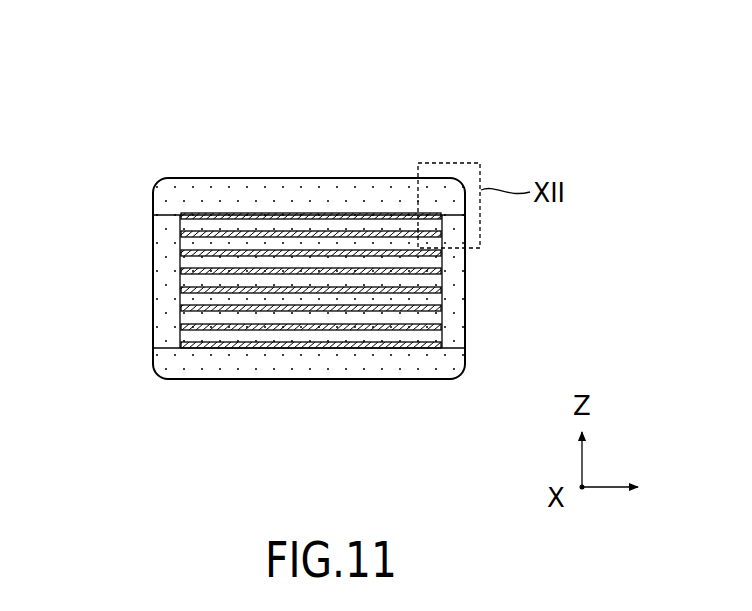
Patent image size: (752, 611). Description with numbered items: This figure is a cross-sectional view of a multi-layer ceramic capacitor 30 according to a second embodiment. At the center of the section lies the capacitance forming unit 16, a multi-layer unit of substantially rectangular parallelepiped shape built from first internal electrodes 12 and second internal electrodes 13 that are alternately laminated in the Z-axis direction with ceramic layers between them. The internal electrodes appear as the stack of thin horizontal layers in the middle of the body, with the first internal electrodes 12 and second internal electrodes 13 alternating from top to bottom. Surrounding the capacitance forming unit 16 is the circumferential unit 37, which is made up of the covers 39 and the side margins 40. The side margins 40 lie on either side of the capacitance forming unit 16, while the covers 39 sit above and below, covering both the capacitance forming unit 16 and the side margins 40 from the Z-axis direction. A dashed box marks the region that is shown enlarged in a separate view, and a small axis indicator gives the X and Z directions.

The multi-layer ceramic capacitor 30 is at (428, 91).
The first internal electrodes 12 is at (203, 326).
The second internal electrodes 13 is at (336, 343).
The capacitance forming unit 16 is at (293, 283).
The circumferential unit 37 is at (285, 246).
The covers 39 is at (206, 178).
The side margins 40 is at (153, 329).